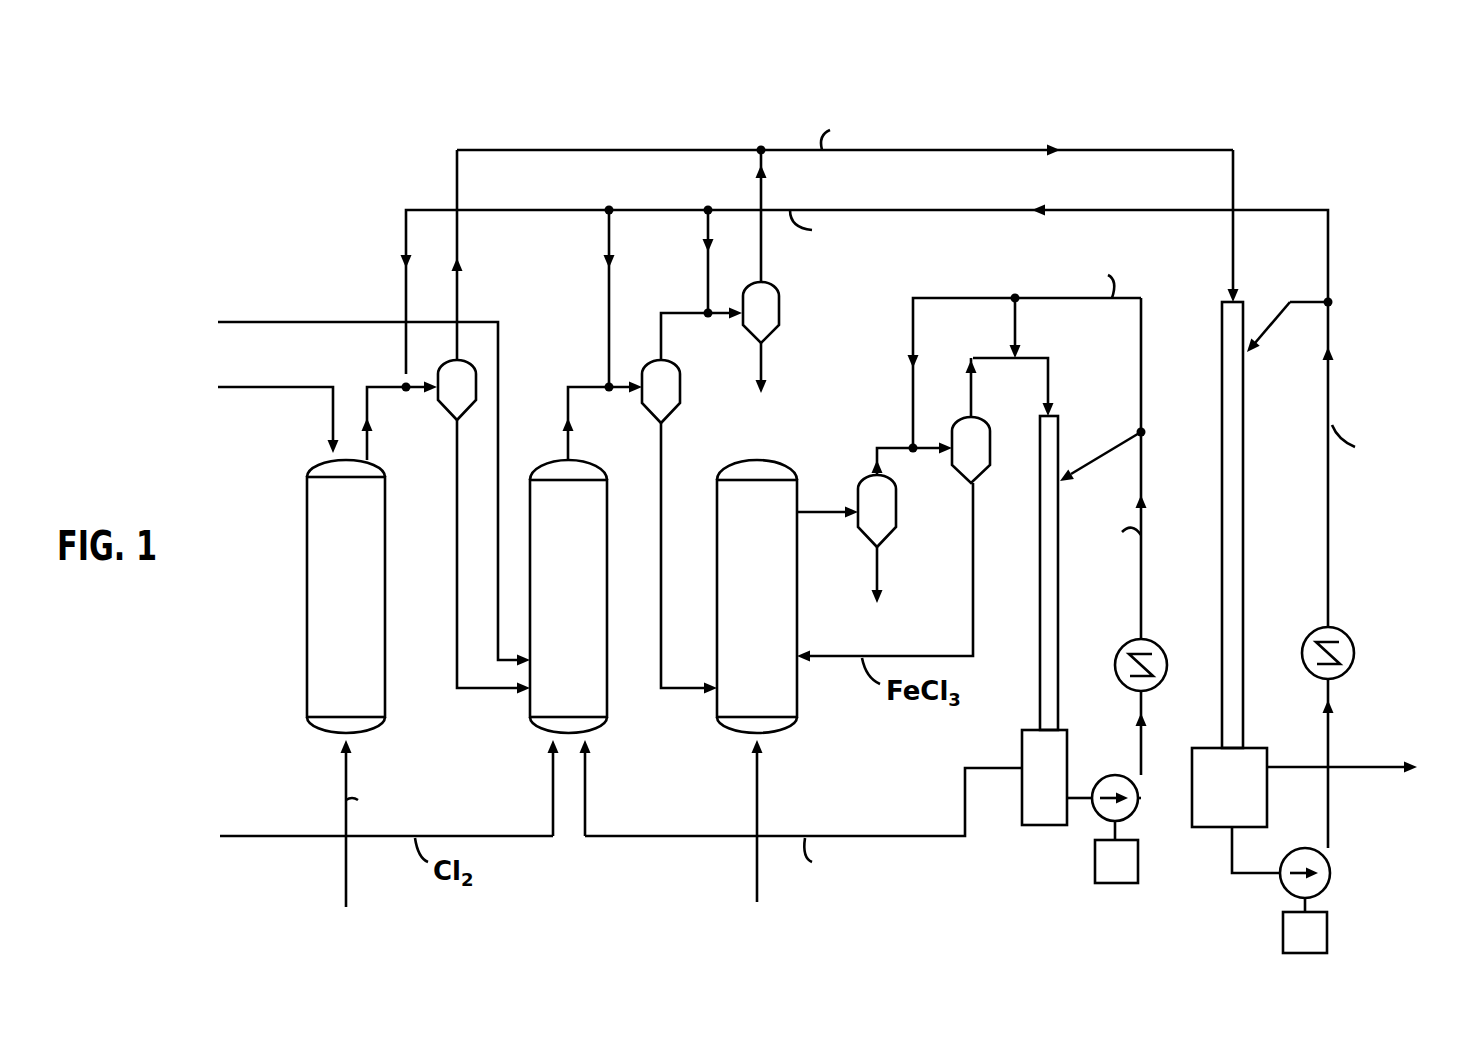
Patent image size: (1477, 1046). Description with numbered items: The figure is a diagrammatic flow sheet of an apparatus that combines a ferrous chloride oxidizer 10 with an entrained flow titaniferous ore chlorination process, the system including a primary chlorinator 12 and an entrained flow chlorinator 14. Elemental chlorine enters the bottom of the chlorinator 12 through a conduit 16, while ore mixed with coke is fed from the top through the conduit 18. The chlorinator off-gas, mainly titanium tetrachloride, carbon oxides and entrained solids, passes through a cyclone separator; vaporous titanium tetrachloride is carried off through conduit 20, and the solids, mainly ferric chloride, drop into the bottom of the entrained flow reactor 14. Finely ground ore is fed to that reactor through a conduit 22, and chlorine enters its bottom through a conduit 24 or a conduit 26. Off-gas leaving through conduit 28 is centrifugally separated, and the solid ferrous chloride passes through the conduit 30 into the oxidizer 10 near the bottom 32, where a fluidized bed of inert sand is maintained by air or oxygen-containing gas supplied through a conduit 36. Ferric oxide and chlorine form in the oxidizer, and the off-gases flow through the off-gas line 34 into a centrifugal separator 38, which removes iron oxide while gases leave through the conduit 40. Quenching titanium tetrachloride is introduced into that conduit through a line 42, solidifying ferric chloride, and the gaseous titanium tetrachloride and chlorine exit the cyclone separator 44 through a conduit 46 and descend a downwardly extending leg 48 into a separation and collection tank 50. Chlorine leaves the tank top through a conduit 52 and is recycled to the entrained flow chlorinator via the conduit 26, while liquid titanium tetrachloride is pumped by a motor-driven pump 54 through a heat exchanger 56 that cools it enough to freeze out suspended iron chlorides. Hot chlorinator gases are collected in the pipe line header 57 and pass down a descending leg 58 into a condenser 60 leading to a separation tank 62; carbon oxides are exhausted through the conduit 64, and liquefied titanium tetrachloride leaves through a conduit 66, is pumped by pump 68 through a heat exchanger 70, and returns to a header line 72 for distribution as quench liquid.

The ferrous chloride oxidizer 10 is at (717, 540).
The primary chlorinator 12 is at (310, 633).
The entrained flow chlorinator 14 is at (607, 596).
The conduit 16 is at (346, 780).
The conduit 18 is at (333, 416).
The conduit 20 is at (458, 235).
The conduit 22 is at (498, 322).
The conduit 24 is at (553, 790).
The conduit 26 is at (585, 795).
The conduit 28 is at (568, 437).
The conduit 30 is at (662, 630).
The bottom 32 is at (790, 719).
The off-gas line 34 is at (824, 512).
The conduit 36 is at (757, 800).
The centrifugal separator 38 is at (880, 517).
The conduit 40 is at (920, 452).
The line 42 is at (913, 327).
The cyclone separator 44 is at (988, 452).
The conduit 46 is at (971, 400).
The downwardly extending leg 48 is at (1040, 632).
The separation and collection tank 50 is at (1022, 737).
The conduit 52 is at (990, 768).
The pump 54 is at (1133, 803).
The heat exchanger 56 is at (1166, 665).
The pipe line (header) 57 is at (1120, 152).
The descending leg 58 is at (1233, 183).
The condenser 60 is at (1243, 510).
The separation tank 62 is at (1267, 790).
The conduit 64 is at (1372, 767).
The conduit 66 is at (1232, 857).
The pump 68 is at (1330, 875).
The heat exchanger 70 is at (1354, 655).
The header line 72 is at (1118, 212).